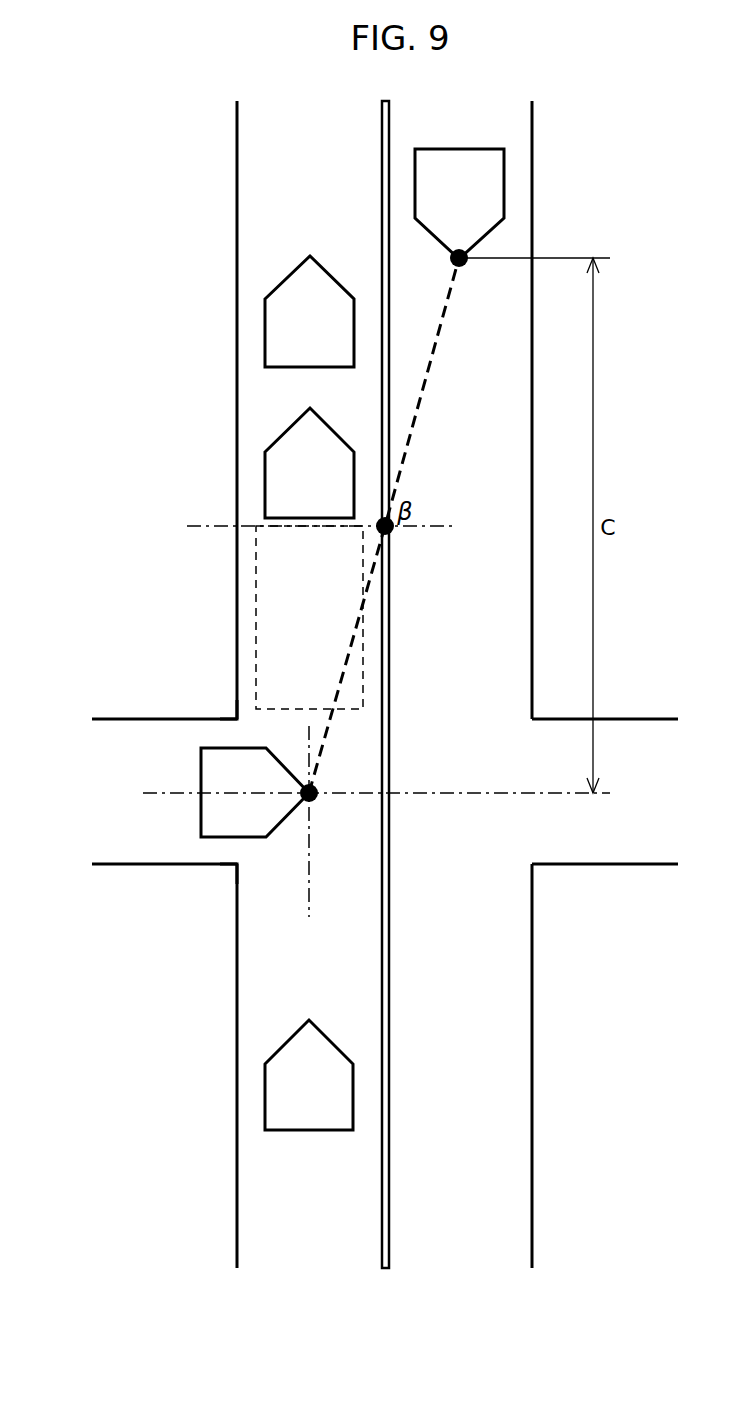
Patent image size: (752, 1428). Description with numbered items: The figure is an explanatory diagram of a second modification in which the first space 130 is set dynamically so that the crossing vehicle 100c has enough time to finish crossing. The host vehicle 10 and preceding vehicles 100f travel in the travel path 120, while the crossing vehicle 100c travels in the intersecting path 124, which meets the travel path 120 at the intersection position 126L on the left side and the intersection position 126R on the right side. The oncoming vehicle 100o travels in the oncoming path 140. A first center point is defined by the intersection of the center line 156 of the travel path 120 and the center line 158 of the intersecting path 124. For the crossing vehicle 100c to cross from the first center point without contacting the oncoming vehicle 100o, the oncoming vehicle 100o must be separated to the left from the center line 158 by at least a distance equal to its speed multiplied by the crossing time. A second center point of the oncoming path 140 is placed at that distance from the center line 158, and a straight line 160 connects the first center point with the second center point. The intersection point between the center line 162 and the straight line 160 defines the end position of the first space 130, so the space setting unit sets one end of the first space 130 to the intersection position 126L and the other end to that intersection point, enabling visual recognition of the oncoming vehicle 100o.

The host vehicle 10 is at (265, 1096).
The crossing vehicle 100c is at (201, 812).
The preceding vehicle 100f is at (265, 476).
The oncoming vehicle 100o is at (504, 177).
The travel path 120 is at (268, 1177).
The intersecting path 124 is at (125, 718).
The intersection position on the left side 126L is at (237, 718).
The intersection position on the right side 126R is at (237, 866).
The first space 130 is at (256, 586).
The oncoming path 140 is at (505, 988).
The center line of the travel path 156 is at (309, 888).
The center line of the intersecting path 158 is at (175, 790).
The straight line 160 is at (432, 368).
The center line 162 is at (389, 1172).